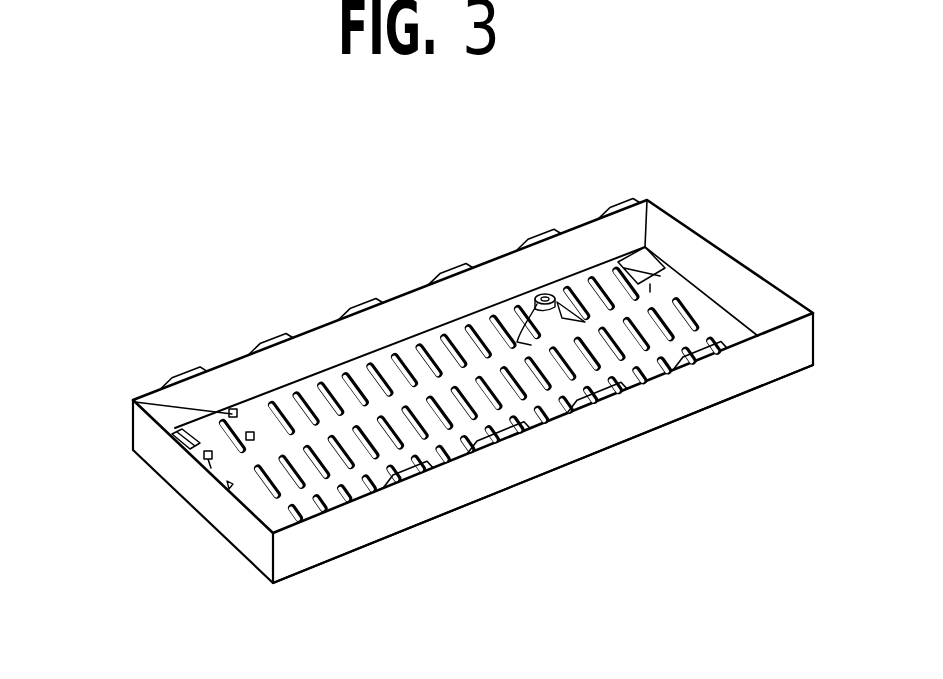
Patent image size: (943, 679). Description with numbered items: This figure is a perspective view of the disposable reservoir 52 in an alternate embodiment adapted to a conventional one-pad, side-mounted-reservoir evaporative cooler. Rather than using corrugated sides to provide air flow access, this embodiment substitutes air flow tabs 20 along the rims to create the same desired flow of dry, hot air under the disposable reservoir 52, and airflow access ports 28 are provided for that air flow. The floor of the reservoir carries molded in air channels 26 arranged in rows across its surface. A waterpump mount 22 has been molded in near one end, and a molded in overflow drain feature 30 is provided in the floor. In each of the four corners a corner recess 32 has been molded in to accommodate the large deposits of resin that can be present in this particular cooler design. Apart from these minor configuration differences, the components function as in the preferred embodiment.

The air flow tabs 20 is at (353, 308).
The molded in waterpump mount 22 is at (233, 414).
The molded in air channels 26 is at (272, 408).
The airflow access port 28 is at (308, 332).
The molded in overflow drain feature 30 is at (538, 295).
The corner recess 32 is at (647, 260).
The disposable reservoir 52 is at (630, 411).